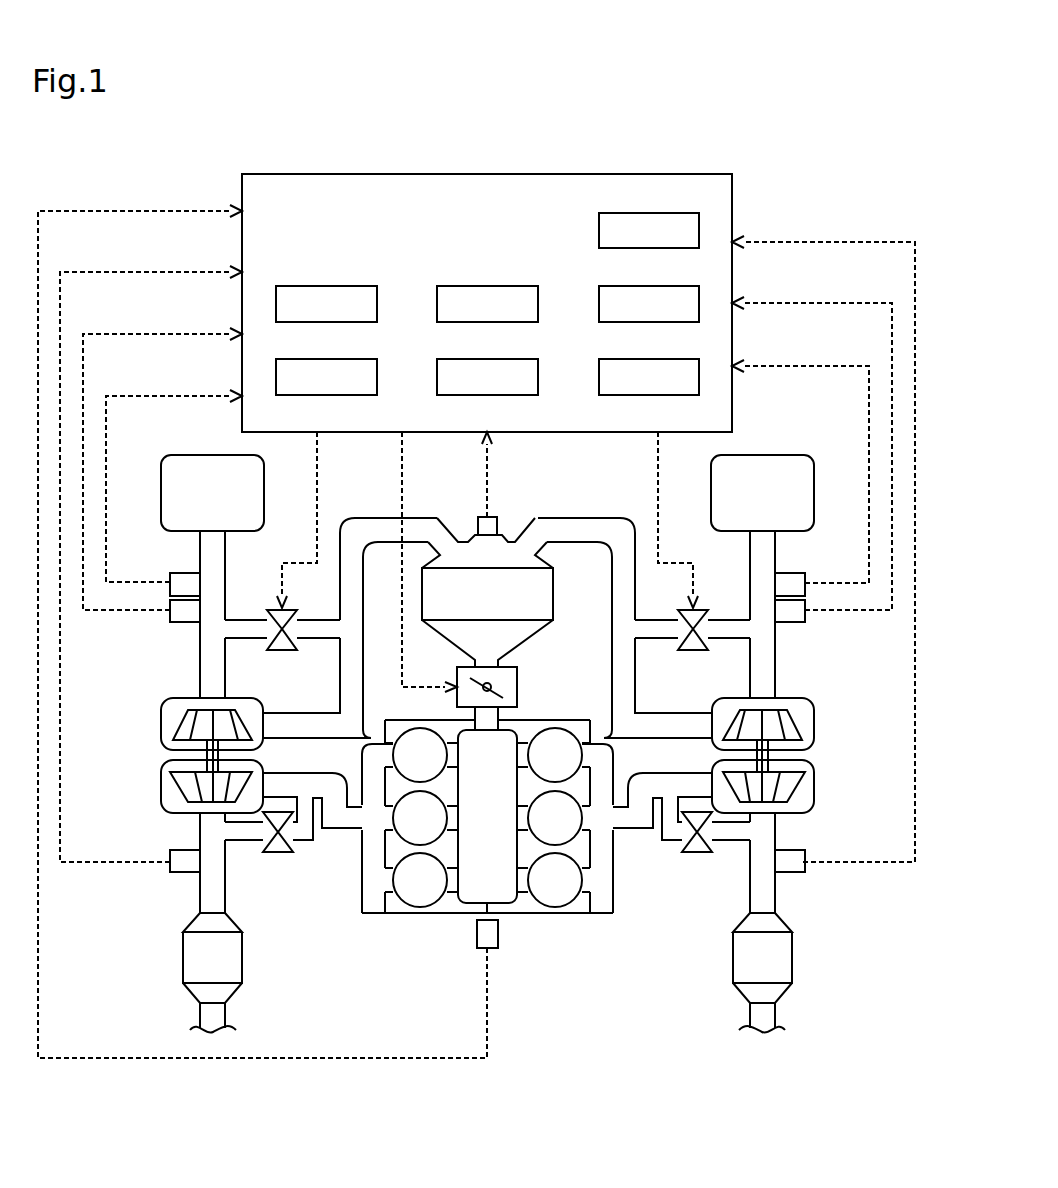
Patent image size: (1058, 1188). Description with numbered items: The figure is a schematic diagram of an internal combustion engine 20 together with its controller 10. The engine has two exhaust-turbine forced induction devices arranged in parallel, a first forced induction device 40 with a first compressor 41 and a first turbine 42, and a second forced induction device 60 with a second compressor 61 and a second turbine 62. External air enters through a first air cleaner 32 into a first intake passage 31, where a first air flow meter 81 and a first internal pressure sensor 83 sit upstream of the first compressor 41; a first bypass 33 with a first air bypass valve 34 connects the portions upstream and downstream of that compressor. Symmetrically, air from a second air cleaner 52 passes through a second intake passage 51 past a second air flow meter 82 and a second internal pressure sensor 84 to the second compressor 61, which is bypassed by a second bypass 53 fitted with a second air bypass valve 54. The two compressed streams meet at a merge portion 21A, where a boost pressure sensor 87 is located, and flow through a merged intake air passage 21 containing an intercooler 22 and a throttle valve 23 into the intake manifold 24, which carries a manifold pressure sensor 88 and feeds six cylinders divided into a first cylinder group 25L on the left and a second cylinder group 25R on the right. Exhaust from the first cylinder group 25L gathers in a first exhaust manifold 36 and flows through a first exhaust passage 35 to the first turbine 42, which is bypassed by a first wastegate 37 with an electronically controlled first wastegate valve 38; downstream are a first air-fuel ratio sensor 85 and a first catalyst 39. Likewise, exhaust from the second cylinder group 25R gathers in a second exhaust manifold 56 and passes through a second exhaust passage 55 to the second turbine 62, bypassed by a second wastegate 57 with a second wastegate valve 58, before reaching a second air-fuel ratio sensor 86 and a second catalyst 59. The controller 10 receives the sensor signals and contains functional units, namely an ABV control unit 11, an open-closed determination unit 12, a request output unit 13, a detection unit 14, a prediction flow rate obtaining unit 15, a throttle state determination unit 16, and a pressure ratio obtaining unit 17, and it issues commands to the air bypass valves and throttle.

The controller 10 is at (557, 174).
The ABV control unit 11 is at (655, 213).
The open-closed determination unit 12 is at (655, 286).
The request output unit 13 is at (655, 359).
The detection unit 14 is at (494, 286).
The prediction flow rate obtaining unit 15 is at (494, 359).
The throttle state determination unit 16 is at (332, 286).
The pressure ratio obtaining unit 17 is at (332, 359).
The internal combustion engine 20 is at (829, 1019).
The merged intake air passage 21 is at (448, 506).
The merge portion 21A is at (512, 537).
The intercooler 22 is at (555, 603).
The throttle valve 23 is at (520, 687).
The intake manifold 24 is at (490, 841).
The first cylinder group 25L is at (402, 878).
The second cylinder group 25R is at (573, 878).
The first intake passage 31 is at (225, 593).
The first air cleaner 32 is at (193, 455).
The first bypass 33 is at (243, 640).
The first air bypass valve 34 is at (284, 652).
The first exhaust passage 35 is at (330, 773).
The first exhaust manifold 36 is at (358, 852).
The first wastegate 37 is at (240, 843).
The first wastegate valve 38 is at (280, 853).
The first catalyst 39 is at (183, 955).
The first forced induction device 40 is at (173, 757).
The first compressor 41 is at (172, 699).
The first turbine 42 is at (182, 816).
The second intake passage 51 is at (750, 593).
The second air cleaner 52 is at (782, 455).
The second bypass 53 is at (730, 640).
The second air bypass valve 54 is at (688, 653).
The second exhaust passage 55 is at (645, 773).
The second exhaust manifold 56 is at (617, 852).
The second wastegate 57 is at (735, 843).
The second wastegate valve 58 is at (695, 853).
The second catalyst 59 is at (792, 955).
The second forced induction device 60 is at (803, 757).
The second compressor 61 is at (800, 699).
The second turbine 62 is at (793, 816).
The first air flow meter 81 is at (187, 572).
The second air flow meter 82 is at (790, 572).
The first internal pressure sensor 83 is at (183, 622).
The second internal pressure sensor 84 is at (793, 622).
The first air-fuel ratio sensor 85 is at (185, 872).
The second air-fuel ratio sensor 86 is at (790, 872).
The boost pressure sensor 87 is at (493, 514).
The manifold pressure sensor 88 is at (477, 930).